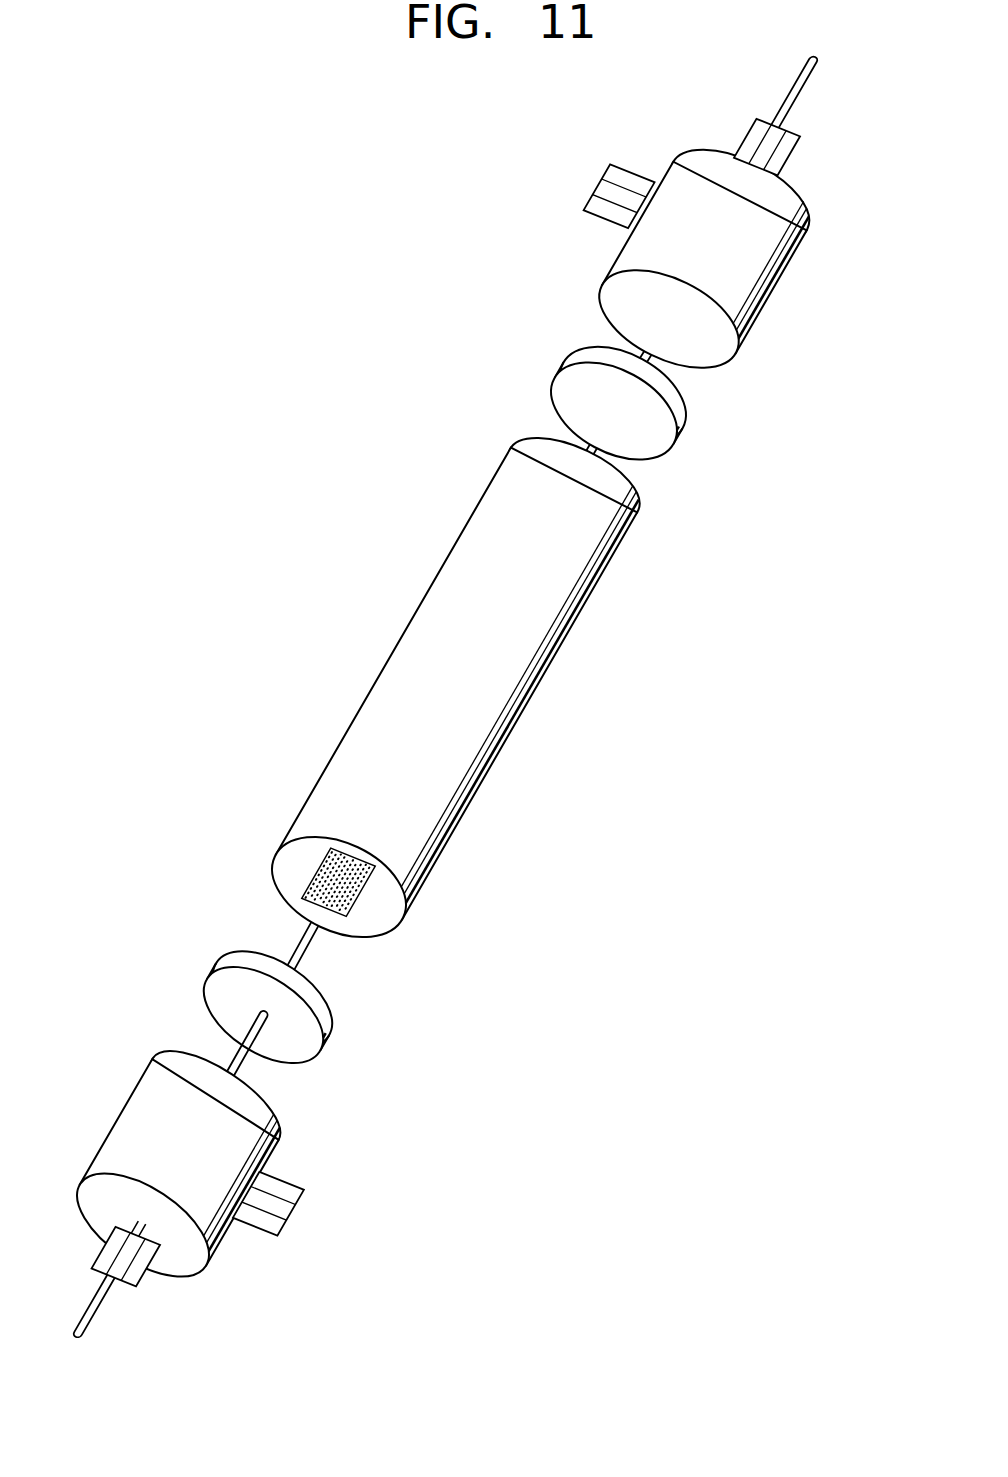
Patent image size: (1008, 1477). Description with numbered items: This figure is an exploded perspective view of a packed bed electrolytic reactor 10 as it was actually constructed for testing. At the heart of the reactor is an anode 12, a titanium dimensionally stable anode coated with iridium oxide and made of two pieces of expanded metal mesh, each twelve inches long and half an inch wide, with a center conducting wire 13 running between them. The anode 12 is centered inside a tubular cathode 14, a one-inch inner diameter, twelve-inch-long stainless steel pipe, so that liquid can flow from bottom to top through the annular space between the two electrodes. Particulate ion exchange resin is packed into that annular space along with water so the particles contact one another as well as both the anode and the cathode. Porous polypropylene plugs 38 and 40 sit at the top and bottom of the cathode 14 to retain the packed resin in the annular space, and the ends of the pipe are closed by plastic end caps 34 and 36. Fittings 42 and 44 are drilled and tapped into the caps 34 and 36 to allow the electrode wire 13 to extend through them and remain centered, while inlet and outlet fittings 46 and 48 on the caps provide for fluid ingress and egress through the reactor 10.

The drive assembly 10 is at (404, 564).
The anode 12 is at (343, 890).
The center conducting wire 13 is at (308, 952).
The tubular cathode 14 is at (530, 667).
The plastic end cap 34 is at (245, 1125).
The plastic end cap 36 is at (632, 254).
The porous polypropylene plug 38 is at (563, 387).
The porous polypropylene plug 40 is at (307, 1029).
The fitting 42 is at (138, 1272).
The fitting 44 is at (783, 158).
The inlet fitting 46 is at (287, 1217).
The outlet fitting 48 is at (607, 187).